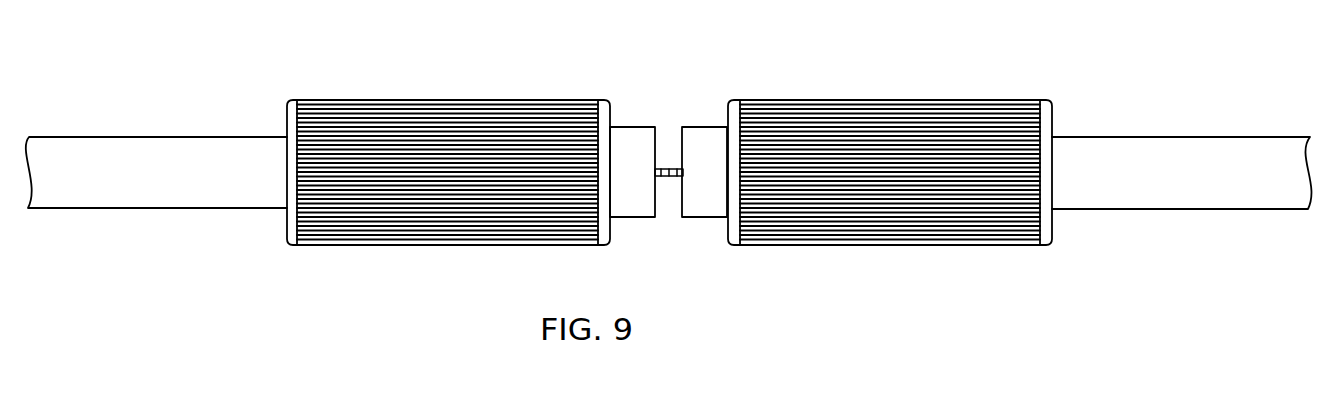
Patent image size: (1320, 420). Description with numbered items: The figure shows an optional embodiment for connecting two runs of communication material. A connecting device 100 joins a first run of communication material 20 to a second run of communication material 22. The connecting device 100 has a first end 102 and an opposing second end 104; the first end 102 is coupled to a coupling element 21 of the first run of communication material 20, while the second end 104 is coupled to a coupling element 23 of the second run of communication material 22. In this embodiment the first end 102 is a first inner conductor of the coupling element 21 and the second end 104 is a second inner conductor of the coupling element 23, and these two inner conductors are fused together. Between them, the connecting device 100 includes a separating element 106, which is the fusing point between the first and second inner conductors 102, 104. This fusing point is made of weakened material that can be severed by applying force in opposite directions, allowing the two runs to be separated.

The first run of communication material 20 is at (115, 142).
The coupling element 21 is at (468, 124).
The second run of communication material 22 is at (1160, 147).
The coupling element 23 is at (930, 142).
The connecting device 100 is at (668, 171).
The first end 102 is at (658, 170).
The second end 104 is at (681, 170).
The separating element 106 is at (668, 168).